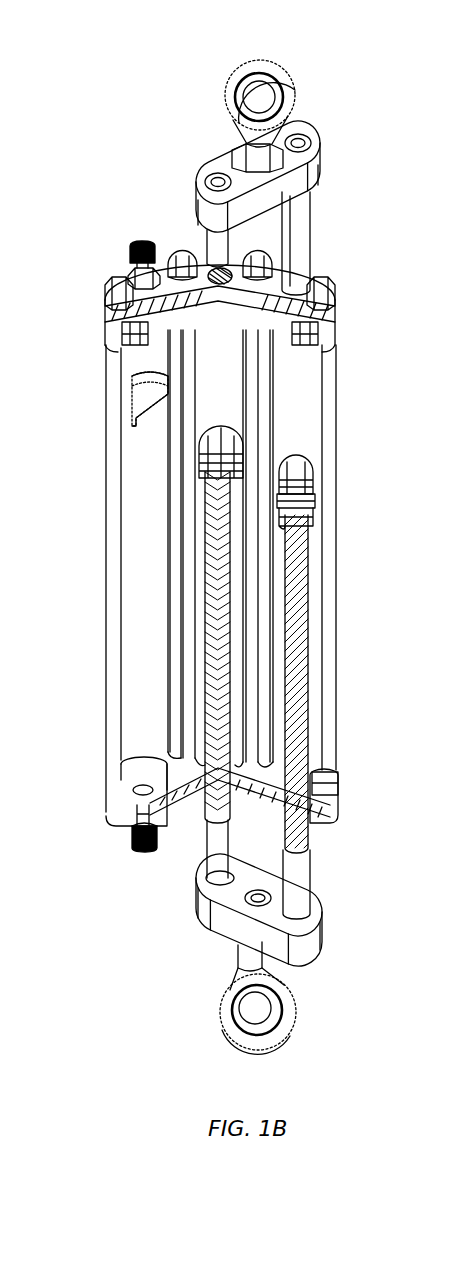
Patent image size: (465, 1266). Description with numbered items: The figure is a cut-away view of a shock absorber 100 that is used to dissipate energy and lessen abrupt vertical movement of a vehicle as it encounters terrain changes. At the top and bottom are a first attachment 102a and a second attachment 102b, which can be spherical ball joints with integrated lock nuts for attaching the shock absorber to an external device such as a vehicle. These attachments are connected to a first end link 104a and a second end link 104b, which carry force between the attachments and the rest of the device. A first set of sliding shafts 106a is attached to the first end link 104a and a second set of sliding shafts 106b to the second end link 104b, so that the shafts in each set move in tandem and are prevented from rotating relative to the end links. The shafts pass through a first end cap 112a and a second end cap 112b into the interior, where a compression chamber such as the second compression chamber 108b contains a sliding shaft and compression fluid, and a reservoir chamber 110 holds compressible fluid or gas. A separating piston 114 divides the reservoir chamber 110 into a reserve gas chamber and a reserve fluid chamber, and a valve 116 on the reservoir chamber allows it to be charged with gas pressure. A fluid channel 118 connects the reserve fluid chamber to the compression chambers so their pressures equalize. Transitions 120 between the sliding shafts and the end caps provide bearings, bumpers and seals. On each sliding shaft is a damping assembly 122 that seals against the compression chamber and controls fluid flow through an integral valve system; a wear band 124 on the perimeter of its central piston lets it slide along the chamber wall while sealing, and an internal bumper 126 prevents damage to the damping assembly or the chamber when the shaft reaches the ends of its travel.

The shock absorber 100 is at (129, 54).
The first attachment 102a is at (226, 78).
The second attachment 102b is at (286, 1017).
The first end link 104a is at (308, 174).
The second end link 104b is at (301, 958).
The first set of sliding shafts 106a is at (296, 213).
The second set of sliding shafts 106b is at (296, 897).
The second compression chamber 108b is at (306, 415).
The reservoir chamber 110 is at (150, 471).
The first end cap 112a is at (333, 343).
The second end cap 112b is at (331, 807).
The separating piston 114 is at (138, 383).
The valve 116 is at (134, 246).
The fluid channel 118 is at (117, 320).
The transition 120 is at (318, 782).
The damping assembly 122 is at (240, 447).
The wear band 124 is at (316, 500).
The internal bumper 126 is at (309, 522).